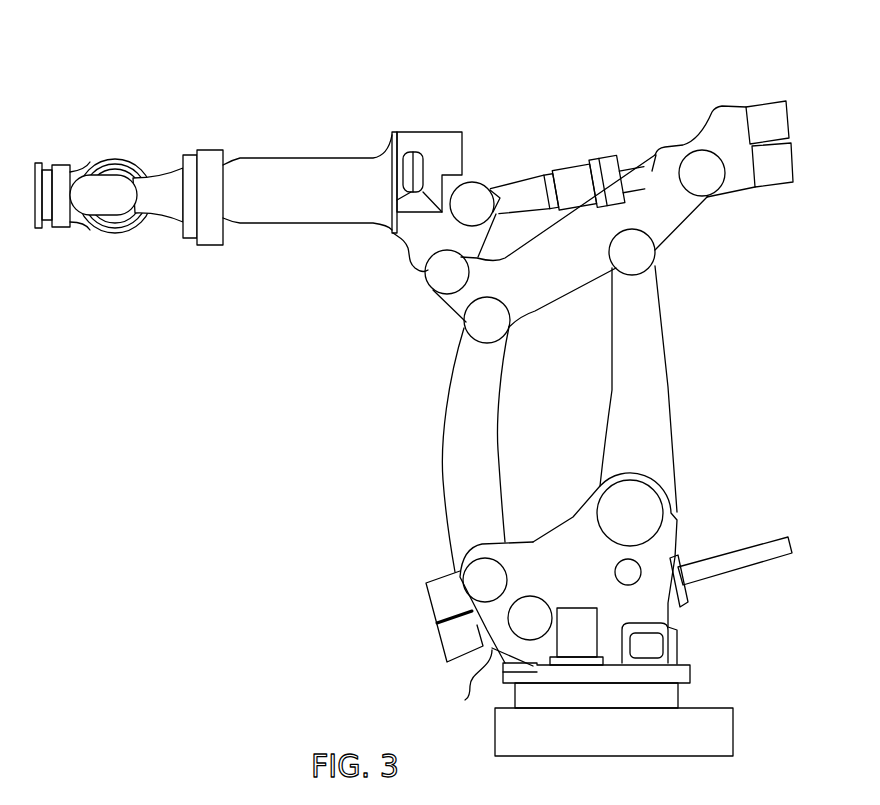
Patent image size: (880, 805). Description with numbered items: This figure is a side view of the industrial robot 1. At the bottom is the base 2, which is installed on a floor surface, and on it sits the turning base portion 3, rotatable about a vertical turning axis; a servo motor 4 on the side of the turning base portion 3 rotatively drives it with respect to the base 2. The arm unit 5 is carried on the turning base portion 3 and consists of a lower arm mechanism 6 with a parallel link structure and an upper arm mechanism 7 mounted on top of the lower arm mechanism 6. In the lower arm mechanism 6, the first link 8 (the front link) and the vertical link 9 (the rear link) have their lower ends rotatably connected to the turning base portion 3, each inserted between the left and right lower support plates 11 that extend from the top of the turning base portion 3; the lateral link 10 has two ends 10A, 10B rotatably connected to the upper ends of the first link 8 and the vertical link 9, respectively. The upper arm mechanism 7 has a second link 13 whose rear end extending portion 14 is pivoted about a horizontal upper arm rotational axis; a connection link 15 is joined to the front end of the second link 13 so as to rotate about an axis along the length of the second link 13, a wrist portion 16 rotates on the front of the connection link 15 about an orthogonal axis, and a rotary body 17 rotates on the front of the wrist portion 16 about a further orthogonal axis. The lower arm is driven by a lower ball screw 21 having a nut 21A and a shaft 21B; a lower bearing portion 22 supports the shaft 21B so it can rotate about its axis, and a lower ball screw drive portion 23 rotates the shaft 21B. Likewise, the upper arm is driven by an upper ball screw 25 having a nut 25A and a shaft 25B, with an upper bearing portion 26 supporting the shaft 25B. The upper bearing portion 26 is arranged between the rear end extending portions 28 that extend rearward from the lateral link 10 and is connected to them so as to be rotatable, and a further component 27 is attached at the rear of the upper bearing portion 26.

The industrial robot 1 is at (273, 93).
The base 2 is at (723, 737).
The turning base portion 3 is at (683, 677).
The servo motor 4 is at (578, 615).
The arm unit 5 is at (432, 403).
The lower arm mechanism 6 is at (326, 447).
The upper arm mechanism 7 is at (182, 136).
The first link 8 is at (453, 430).
The vertical link 9 is at (663, 380).
The lateral link 10 is at (588, 290).
The end of lateral link 10A is at (520, 318).
The end of lateral link 10B is at (665, 247).
The lower support plate 11 is at (538, 548).
The second link 13 is at (316, 210).
The rear end extending portion 14 is at (420, 245).
The connection link 15 is at (166, 225).
The wrist portion 16 is at (88, 205).
The rotary body 17 is at (38, 230).
The lower ball screw 21 is at (795, 592).
The nut 21A is at (687, 605).
The shaft 21B is at (717, 570).
The lower bearing portion 22 is at (471, 692).
The lower ball screw drive portion 23 is at (430, 590).
The upper ball screw 25 is at (525, 72).
The nut 25A is at (573, 170).
The shaft 25B is at (637, 170).
The upper bearing portion 26 is at (712, 133).
The counterweight 27 is at (762, 115).
The rear end extending portion 28 is at (700, 212).